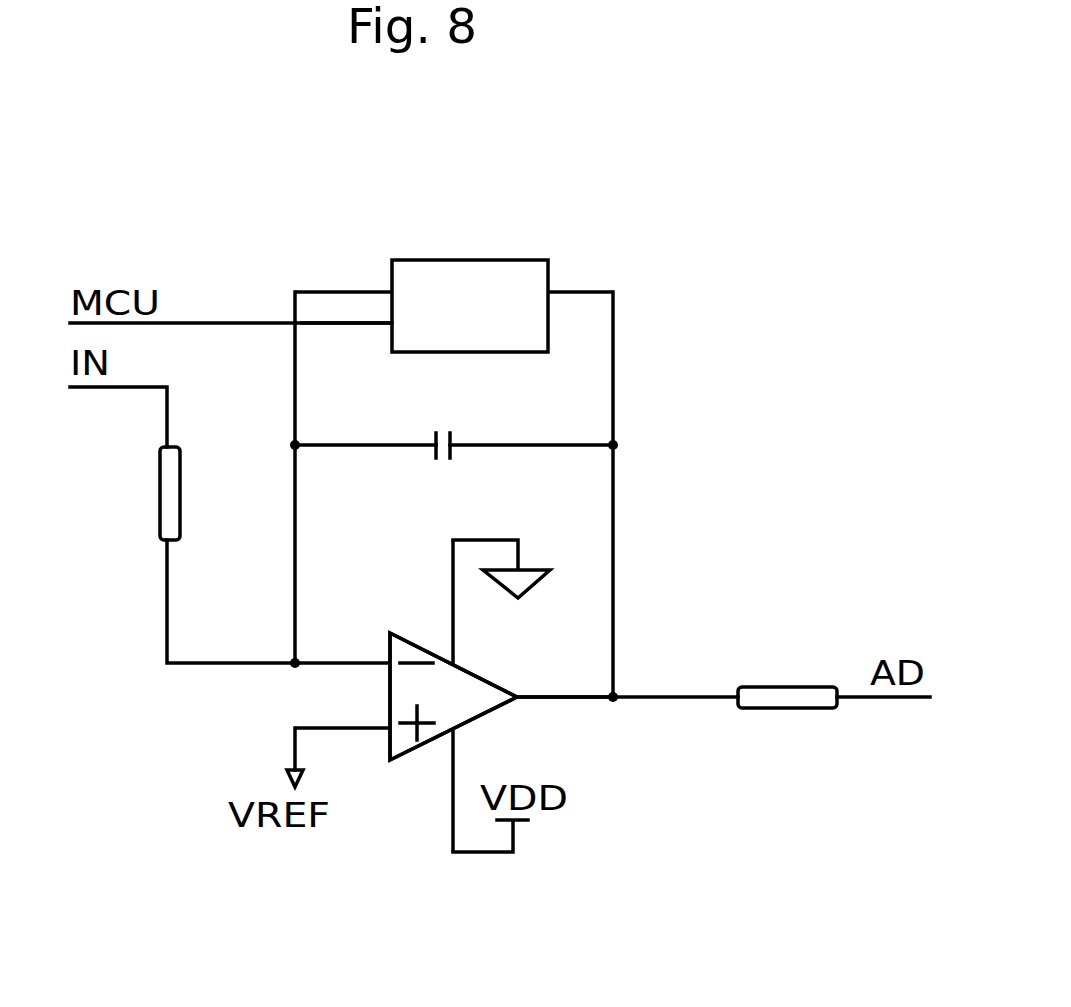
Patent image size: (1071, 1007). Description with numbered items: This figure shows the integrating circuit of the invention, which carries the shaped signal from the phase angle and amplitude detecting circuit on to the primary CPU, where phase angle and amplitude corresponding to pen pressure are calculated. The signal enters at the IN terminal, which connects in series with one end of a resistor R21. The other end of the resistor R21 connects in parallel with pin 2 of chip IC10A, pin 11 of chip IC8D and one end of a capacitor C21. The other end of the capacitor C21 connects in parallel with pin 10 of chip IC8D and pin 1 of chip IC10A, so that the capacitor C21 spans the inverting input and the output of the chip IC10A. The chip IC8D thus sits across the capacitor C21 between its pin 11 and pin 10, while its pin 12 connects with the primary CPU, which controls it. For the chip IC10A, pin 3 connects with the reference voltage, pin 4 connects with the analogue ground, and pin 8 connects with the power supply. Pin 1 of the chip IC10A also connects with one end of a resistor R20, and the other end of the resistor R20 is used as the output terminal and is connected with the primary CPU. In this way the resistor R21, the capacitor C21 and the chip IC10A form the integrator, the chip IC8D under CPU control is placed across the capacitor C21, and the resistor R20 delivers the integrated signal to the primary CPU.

The chip IC8D is at (475, 255).
The pin 11 of IC8D 11 is at (343, 273).
The pin 12 of chip IC8D 12 is at (346, 306).
The pin 10 of chip IC8D 10 is at (581, 270).
The resistor R21 is at (203, 493).
The capacitor C21 is at (454, 448).
The chip IC10A is at (411, 627).
The pin 4 of chip IC10A 4 is at (436, 602).
The pin 2 of chip IC10A 2 is at (342, 643).
The pin 3 of chip IC10A 3 is at (342, 705).
The pin 1 of chip IC10A 1 is at (565, 675).
The pin 8 of chip IC10A 8 is at (436, 790).
The resistor R20 is at (787, 704).